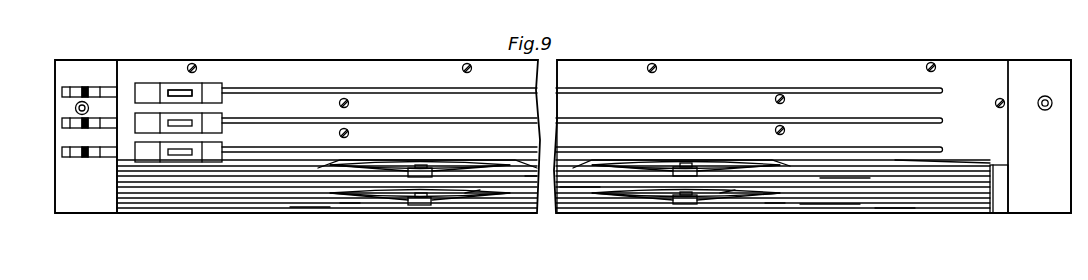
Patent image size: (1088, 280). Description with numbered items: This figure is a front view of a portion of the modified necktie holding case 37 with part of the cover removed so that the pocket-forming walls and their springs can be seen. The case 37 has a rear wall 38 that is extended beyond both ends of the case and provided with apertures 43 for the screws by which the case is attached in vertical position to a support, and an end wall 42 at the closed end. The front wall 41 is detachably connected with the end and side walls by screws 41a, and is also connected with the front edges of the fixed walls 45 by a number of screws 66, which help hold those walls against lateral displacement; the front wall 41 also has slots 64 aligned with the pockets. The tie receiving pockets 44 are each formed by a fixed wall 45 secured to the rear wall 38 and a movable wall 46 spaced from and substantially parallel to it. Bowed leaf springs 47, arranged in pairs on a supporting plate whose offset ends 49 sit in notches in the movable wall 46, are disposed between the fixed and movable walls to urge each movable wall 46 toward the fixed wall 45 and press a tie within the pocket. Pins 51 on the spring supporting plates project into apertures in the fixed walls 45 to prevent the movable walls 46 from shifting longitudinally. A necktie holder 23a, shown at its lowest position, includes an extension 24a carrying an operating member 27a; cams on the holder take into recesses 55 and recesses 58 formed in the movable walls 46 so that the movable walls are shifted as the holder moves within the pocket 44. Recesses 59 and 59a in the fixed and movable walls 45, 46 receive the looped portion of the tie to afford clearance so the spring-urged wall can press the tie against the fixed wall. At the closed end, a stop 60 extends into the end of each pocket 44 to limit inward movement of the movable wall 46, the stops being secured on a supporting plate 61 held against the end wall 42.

The necktie holder 23a is at (66, 86).
The operating member 27a is at (147, 86).
The extension 24a is at (176, 90).
The case 37 is at (263, 60).
The screws 66 is at (346, 98).
The screws 41a is at (464, 64).
The apertures 43 is at (75, 109).
The rear wall 38 is at (103, 207).
The tie receiving pockets 44 is at (188, 183).
The recesses 58 is at (307, 211).
The movable wall 46 is at (358, 203).
The pins 51 is at (422, 206).
The bowed leaf springs 47 is at (477, 198).
The slots 64 is at (628, 91).
The front wall 41 is at (749, 65).
The fixed wall 45 is at (573, 188).
The offset ends 49 is at (690, 206).
The recesses 59 is at (820, 206).
The recesses 59a is at (851, 180).
The recesses 55 is at (895, 209).
The stop 60 is at (984, 178).
The supporting plate 61 is at (991, 207).
The end wall 42 is at (1002, 206).